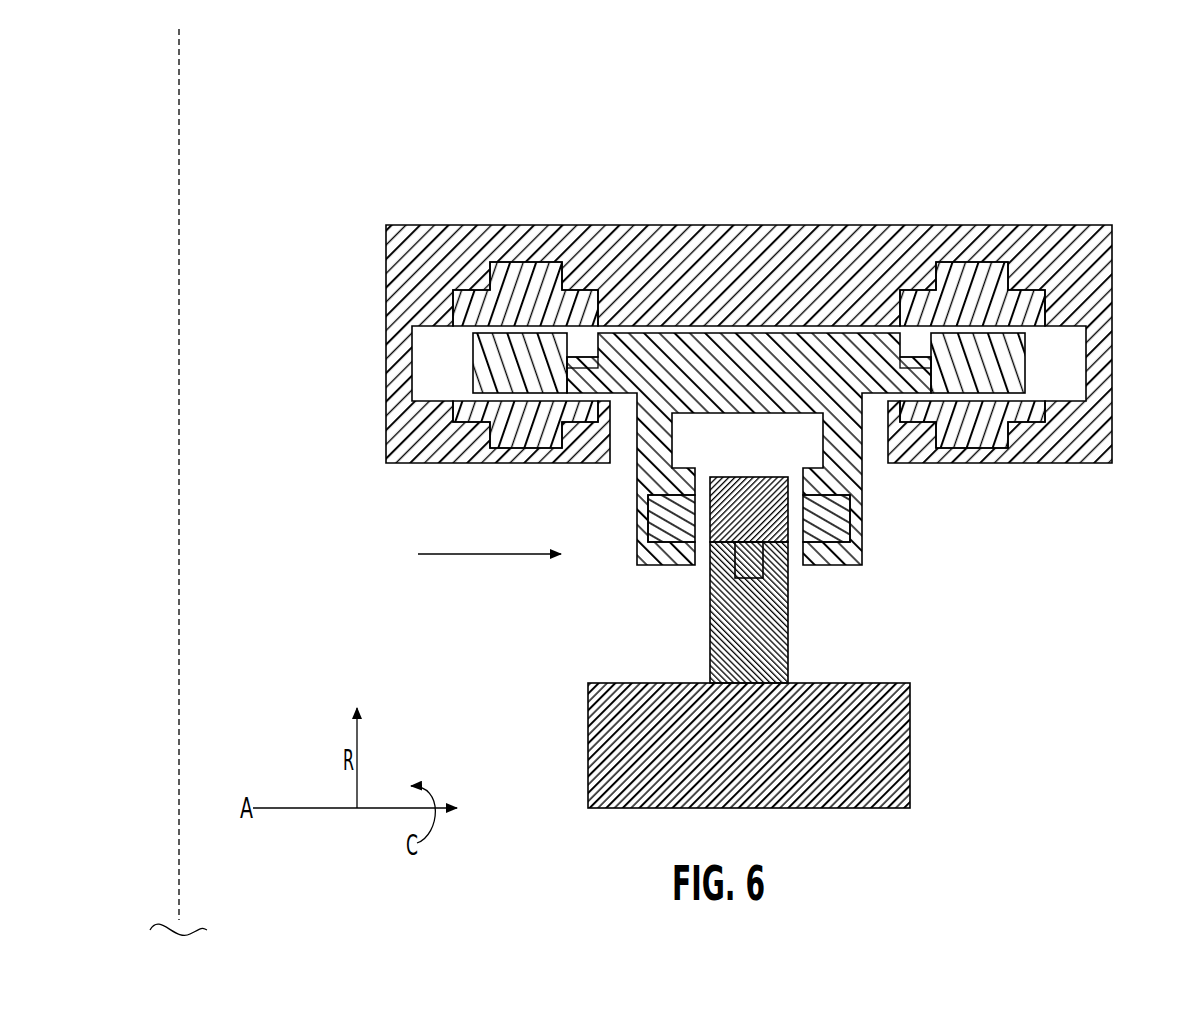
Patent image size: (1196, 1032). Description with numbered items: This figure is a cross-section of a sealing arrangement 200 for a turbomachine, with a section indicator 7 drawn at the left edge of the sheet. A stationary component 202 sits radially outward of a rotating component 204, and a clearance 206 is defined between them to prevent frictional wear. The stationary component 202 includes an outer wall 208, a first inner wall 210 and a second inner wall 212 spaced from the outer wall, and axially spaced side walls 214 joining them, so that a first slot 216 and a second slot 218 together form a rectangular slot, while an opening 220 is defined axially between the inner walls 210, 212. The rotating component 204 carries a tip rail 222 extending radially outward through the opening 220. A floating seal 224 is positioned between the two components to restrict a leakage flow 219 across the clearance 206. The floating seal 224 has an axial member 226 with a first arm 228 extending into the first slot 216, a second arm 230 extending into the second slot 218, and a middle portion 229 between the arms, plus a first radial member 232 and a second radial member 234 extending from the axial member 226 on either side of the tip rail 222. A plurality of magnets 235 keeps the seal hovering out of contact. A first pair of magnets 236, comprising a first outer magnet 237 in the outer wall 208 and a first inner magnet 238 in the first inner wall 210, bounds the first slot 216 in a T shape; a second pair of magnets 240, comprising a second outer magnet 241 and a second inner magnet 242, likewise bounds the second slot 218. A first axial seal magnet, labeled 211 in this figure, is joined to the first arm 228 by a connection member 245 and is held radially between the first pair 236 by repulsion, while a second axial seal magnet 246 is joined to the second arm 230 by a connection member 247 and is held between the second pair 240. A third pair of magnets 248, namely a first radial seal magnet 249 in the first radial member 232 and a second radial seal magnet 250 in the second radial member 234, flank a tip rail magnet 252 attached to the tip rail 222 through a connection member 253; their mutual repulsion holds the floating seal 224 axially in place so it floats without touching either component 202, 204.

The section line for FIG. 7 is at (179, 29).
The sealing arrangement 200 is at (382, 202).
The stationary component 202 is at (1098, 288).
The rotating component 204 is at (845, 780).
The clearance 206 is at (727, 420).
The outer wall 208 is at (735, 265).
The first inner wall 210 is at (440, 440).
The left rotor magnet 211 is at (473, 358).
The second inner wall 212 is at (1063, 437).
The side walls 214 is at (397, 362).
The first slot 216 is at (424, 384).
The second slot 218 is at (1064, 366).
The leakage flow 219 is at (478, 556).
The opening 220 is at (872, 464).
The tip rail 222 is at (773, 643).
The floating seal 224 is at (822, 356).
The axial member 226 is at (683, 360).
The first arm 228 is at (633, 347).
The middle portion 229 is at (758, 365).
The second arm 230 is at (915, 347).
The first radial member 232 is at (635, 475).
The second radial member 234 is at (860, 548).
The plurality of magnets 235 is at (1090, 259).
The first pair of magnets 236 is at (525, 349).
The first outer magnet 237 is at (503, 262).
The first inner magnet 238 is at (507, 423).
The second pair of magnets 240 is at (972, 345).
The second outer magnet 241 is at (985, 277).
The second inner magnet 242 is at (950, 437).
The connection member 245 is at (582, 357).
The second axial seal magnet 246 is at (1003, 372).
The connection member 247 is at (920, 363).
The third pair of magnets 248 is at (705, 562).
The first radial seal magnet 249 is at (680, 548).
The second radial seal magnet 250 is at (807, 563).
The tip rail magnet 252 is at (740, 490).
The connection member 253 is at (748, 557).